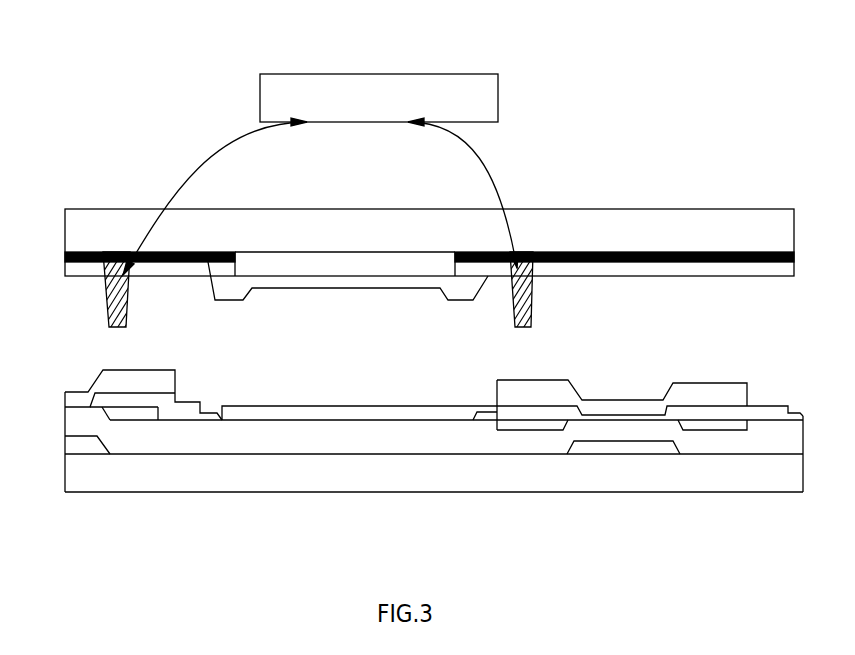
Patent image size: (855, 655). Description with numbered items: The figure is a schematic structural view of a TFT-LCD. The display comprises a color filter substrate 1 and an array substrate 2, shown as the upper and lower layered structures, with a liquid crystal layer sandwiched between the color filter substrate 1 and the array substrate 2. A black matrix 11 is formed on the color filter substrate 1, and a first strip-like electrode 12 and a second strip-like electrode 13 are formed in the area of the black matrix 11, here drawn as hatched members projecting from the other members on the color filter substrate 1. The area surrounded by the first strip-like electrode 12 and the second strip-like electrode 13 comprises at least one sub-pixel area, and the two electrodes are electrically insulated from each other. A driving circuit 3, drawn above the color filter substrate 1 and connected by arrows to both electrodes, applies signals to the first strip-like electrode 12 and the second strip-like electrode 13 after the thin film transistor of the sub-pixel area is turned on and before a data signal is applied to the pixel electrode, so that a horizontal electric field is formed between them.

The color filter substrate 1 is at (412, 199).
The array substrate 2 is at (421, 462).
The driving circuit 3 is at (355, 72).
The black matrix 11 is at (319, 300).
The first strip-like electrode 12 is at (95, 294).
The second strip-like electrode 13 is at (501, 296).